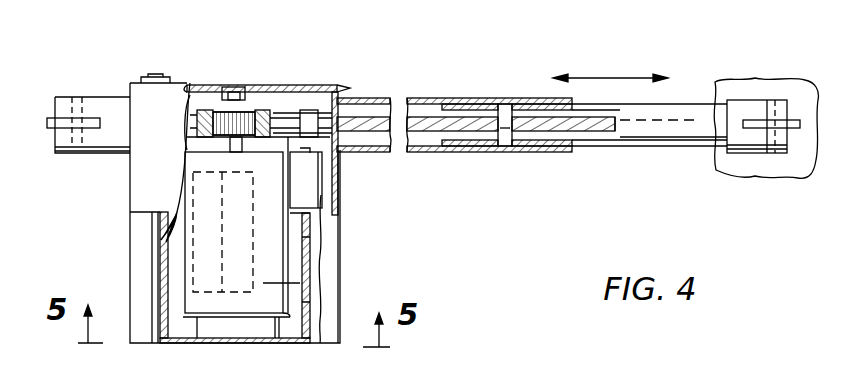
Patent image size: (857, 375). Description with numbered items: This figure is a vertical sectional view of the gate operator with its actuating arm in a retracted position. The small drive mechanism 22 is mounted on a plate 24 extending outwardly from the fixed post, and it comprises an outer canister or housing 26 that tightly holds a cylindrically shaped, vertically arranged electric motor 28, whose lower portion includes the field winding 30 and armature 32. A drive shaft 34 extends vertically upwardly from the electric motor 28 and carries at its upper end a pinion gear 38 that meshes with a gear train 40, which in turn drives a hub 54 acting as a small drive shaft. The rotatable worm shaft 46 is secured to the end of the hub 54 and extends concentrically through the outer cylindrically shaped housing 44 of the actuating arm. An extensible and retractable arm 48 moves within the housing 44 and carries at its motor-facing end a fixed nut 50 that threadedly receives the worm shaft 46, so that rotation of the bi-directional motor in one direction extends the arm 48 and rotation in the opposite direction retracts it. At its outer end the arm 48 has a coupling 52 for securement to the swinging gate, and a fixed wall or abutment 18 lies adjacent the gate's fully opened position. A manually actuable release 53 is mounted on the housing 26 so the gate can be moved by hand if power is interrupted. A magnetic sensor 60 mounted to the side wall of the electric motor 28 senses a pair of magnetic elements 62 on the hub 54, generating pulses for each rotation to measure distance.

The fixed wall or abutment 18 is at (808, 93).
The small drive mechanism 22 is at (345, 188).
The plate 24 is at (90, 118).
The housing 26 is at (325, 260).
The electric motor 28 is at (203, 268).
The field winding 30 is at (143, 235).
The armature 32 is at (300, 285).
The drive shaft 34 is at (233, 143).
The worm 38 is at (213, 112).
The gear train 40 is at (262, 114).
The outer cylindrically shaped housing 44 is at (480, 98).
The rotatable worm shaft 46 is at (487, 149).
The extensible and retractable arm 48 is at (678, 146).
The fixed nut 50 is at (518, 150).
The coupling 52 is at (747, 105).
The manually actuable release 53 is at (157, 74).
The hub 54 is at (293, 116).
The magnetic sensor 60 is at (307, 197).
The pair of magnetic elements 62 is at (378, 92).